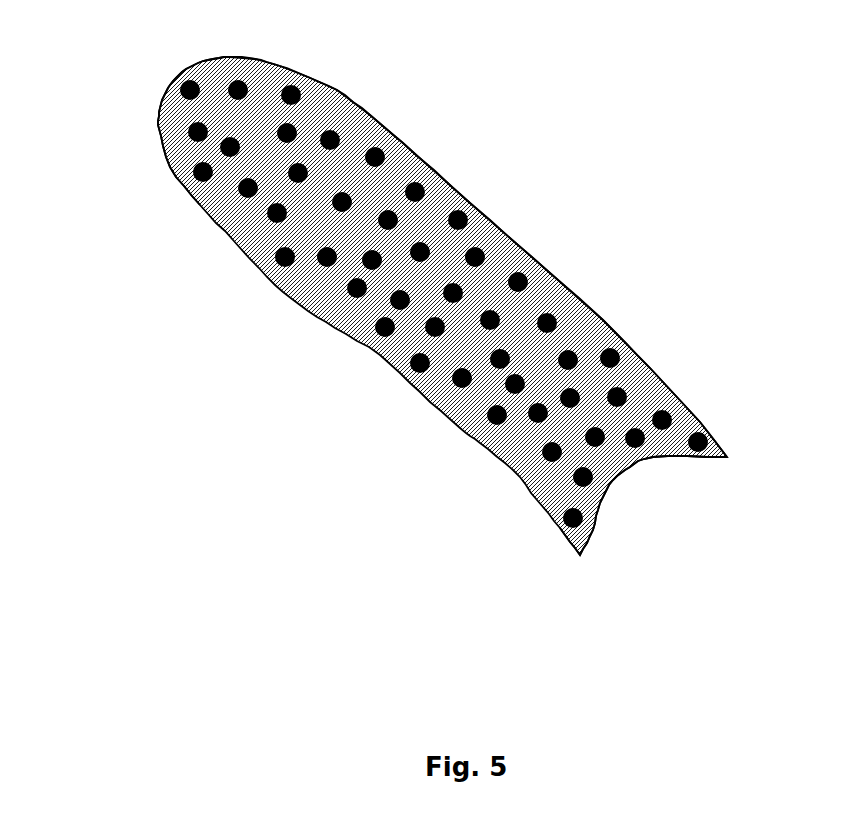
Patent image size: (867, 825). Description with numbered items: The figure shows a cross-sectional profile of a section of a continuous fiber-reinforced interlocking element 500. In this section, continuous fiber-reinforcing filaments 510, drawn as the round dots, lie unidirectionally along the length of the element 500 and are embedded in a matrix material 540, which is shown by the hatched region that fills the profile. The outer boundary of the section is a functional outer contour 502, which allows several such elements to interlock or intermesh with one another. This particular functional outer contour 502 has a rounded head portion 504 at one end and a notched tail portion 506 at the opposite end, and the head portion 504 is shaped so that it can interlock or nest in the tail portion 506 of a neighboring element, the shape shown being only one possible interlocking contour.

The continuous fiber-reinforced interlocking element 500 is at (572, 98).
The functional outer contour 502 is at (331, 88).
The head portion 504 is at (157, 105).
The tail portion 506 is at (623, 468).
The continuous fiber-reinforcing filaments 510 is at (182, 85).
The matrix material 540 is at (383, 173).